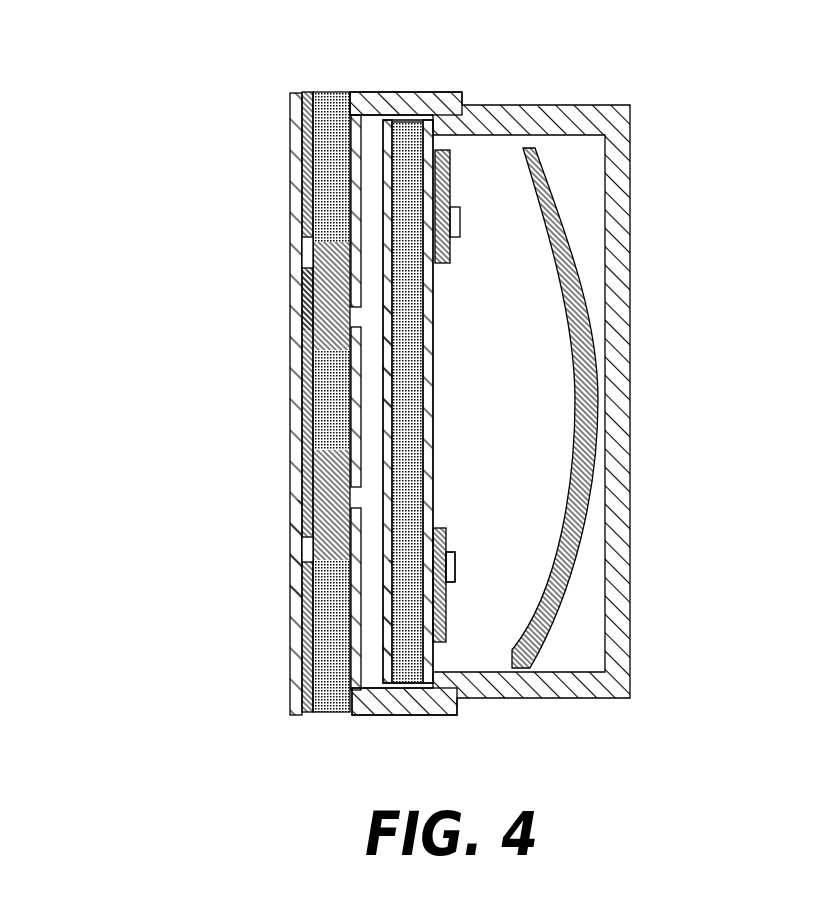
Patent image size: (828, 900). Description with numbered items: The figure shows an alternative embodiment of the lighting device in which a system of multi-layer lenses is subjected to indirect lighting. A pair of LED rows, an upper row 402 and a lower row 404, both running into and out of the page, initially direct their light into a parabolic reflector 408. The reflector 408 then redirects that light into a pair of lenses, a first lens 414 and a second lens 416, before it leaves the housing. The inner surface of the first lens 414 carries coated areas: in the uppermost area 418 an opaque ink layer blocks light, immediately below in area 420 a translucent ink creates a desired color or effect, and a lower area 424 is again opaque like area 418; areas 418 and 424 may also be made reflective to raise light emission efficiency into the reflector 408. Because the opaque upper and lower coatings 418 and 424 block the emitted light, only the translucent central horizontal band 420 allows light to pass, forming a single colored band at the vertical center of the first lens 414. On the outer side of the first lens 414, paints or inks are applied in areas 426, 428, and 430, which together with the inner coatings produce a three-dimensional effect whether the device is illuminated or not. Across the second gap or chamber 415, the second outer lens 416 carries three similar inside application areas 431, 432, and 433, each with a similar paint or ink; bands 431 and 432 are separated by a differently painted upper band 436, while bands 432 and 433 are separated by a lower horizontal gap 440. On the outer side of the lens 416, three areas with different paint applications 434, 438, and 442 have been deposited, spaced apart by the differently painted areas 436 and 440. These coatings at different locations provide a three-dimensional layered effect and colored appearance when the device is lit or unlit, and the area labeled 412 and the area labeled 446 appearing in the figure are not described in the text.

The upper row 402 is at (460, 227).
The lower row 404 is at (456, 566).
The reflector 408 is at (592, 376).
The lens 412 is at (542, 308).
The first lens 414 is at (410, 435).
The second gap/chamber 415 is at (370, 663).
The second lens 416 is at (316, 308).
The area 418 is at (437, 148).
The area 420 is at (432, 348).
The area 424 is at (445, 530).
The area 426 is at (366, 178).
The area 428 is at (385, 358).
The area 430 is at (387, 605).
The application area 431 is at (302, 283).
The application area 432 is at (353, 394).
The application area 433 is at (300, 555).
The paint application area 434 is at (310, 143).
The upper band 436 is at (306, 260).
The paint application area 438 is at (300, 473).
The lower horizontal gap 440 is at (290, 220).
The paint application area 442 is at (300, 605).
The middle layer 446 is at (332, 427).